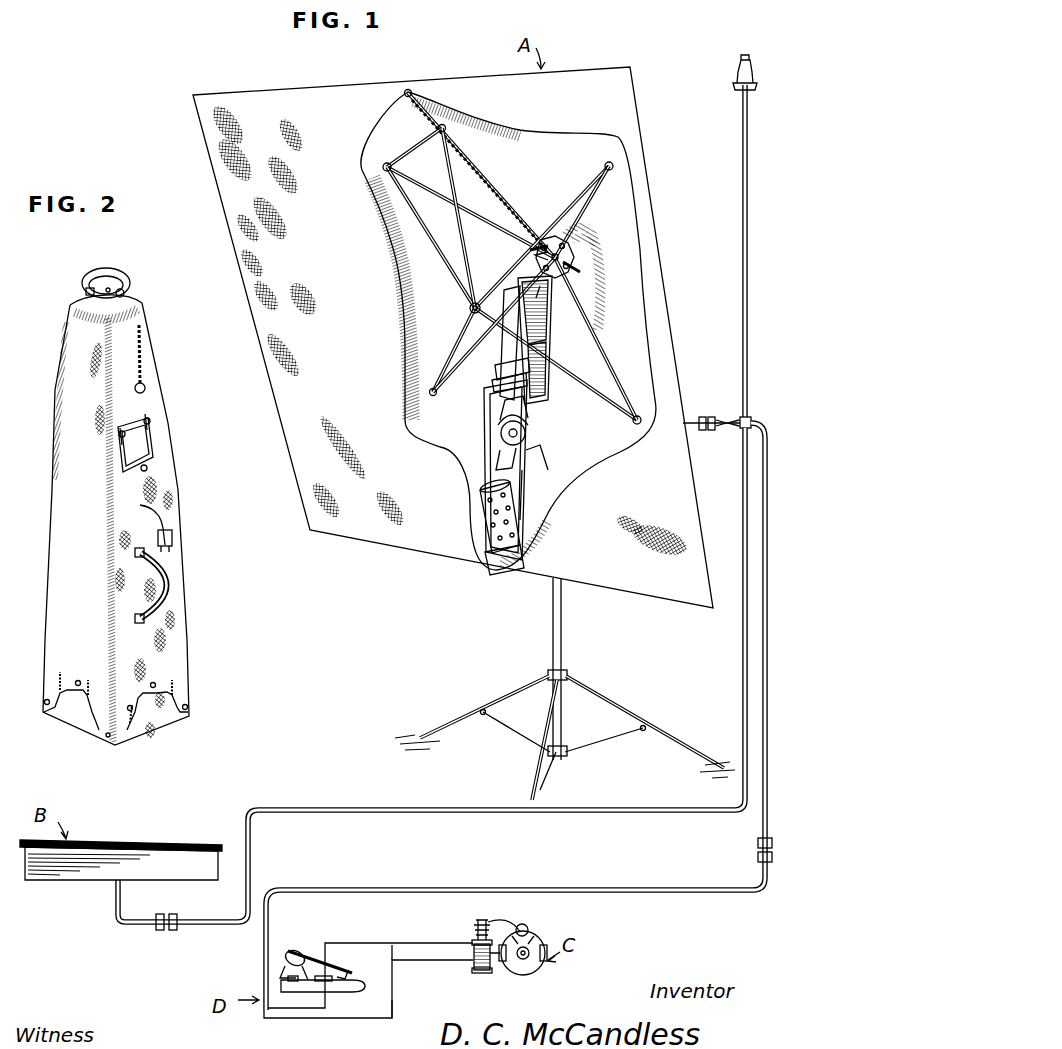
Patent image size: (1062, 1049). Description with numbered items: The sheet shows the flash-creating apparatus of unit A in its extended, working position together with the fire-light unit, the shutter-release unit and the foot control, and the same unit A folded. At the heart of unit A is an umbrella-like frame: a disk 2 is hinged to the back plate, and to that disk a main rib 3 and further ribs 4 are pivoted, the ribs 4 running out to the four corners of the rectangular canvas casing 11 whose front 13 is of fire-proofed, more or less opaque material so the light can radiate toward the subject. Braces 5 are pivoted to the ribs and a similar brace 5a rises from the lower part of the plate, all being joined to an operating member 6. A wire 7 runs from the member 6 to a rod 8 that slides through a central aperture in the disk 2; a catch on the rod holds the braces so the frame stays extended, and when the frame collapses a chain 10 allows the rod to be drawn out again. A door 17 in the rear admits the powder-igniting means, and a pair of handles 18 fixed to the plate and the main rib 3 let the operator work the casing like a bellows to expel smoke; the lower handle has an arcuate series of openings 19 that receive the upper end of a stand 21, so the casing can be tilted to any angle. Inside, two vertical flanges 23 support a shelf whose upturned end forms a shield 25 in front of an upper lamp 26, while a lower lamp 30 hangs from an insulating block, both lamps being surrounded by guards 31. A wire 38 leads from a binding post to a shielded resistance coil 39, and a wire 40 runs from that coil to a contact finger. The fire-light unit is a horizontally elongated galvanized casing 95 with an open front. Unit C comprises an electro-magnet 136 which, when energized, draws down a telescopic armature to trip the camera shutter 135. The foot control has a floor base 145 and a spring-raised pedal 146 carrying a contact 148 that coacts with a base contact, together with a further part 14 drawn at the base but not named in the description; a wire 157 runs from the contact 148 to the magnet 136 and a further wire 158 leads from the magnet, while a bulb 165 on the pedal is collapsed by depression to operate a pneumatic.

In FIG. 1, the disk 2 is at (508, 331).
In FIG. 1, the main rib 3 is at (498, 178).
In FIG. 1, the ribs 4 is at (414, 180).
In FIG. 1, the braces 5 is at (382, 216).
In FIG. 1, the brace 5a is at (480, 409).
In FIG. 1, the operating member 6 is at (468, 309).
In FIG. 1, the wire 7 is at (498, 278).
In FIG. 1, the rod 8 is at (534, 252).
In FIG. 2, the chain 10 is at (143, 352).
In FIG. 1, the casing 11 is at (226, 229).
In FIG. 2, the casing 11 is at (172, 462).
In FIG. 1, the front 13 is at (256, 261).
In FIG. 1, the base plate 14 is at (318, 994).
In FIG. 2, the door 17 is at (150, 428).
In FIG. 2, the handles 18 is at (178, 586).
In FIG. 2, the openings 19 is at (170, 550).
In FIG. 1, the stand 21 is at (560, 652).
In FIG. 1, the flanges 23 is at (575, 340).
In FIG. 1, the shield 25 is at (566, 298).
In FIG. 1, the lamp 26 is at (566, 320).
In FIG. 1, the lower lamp 30 is at (500, 452).
In FIG. 1, the guards 31 is at (562, 284).
In FIG. 1, the wire 38 is at (522, 472).
In FIG. 1, the resistance coil 39 is at (488, 517).
In FIG. 1, the wire 40 is at (505, 468).
In FIG. 1, the casing 95 is at (150, 838).
In FIG. 1, the shutter 135 is at (528, 960).
In FIG. 1, the electro-magnet 136 is at (480, 972).
In FIG. 1, the base 145 is at (292, 994).
In FIG. 1, the foot pedal 146 is at (312, 970).
In FIG. 1, the contact 148 is at (332, 972).
In FIG. 1, the wire 157 is at (415, 943).
In FIG. 1, the wire 158 is at (445, 963).
In FIG. 1, the bulb 165 is at (287, 966).